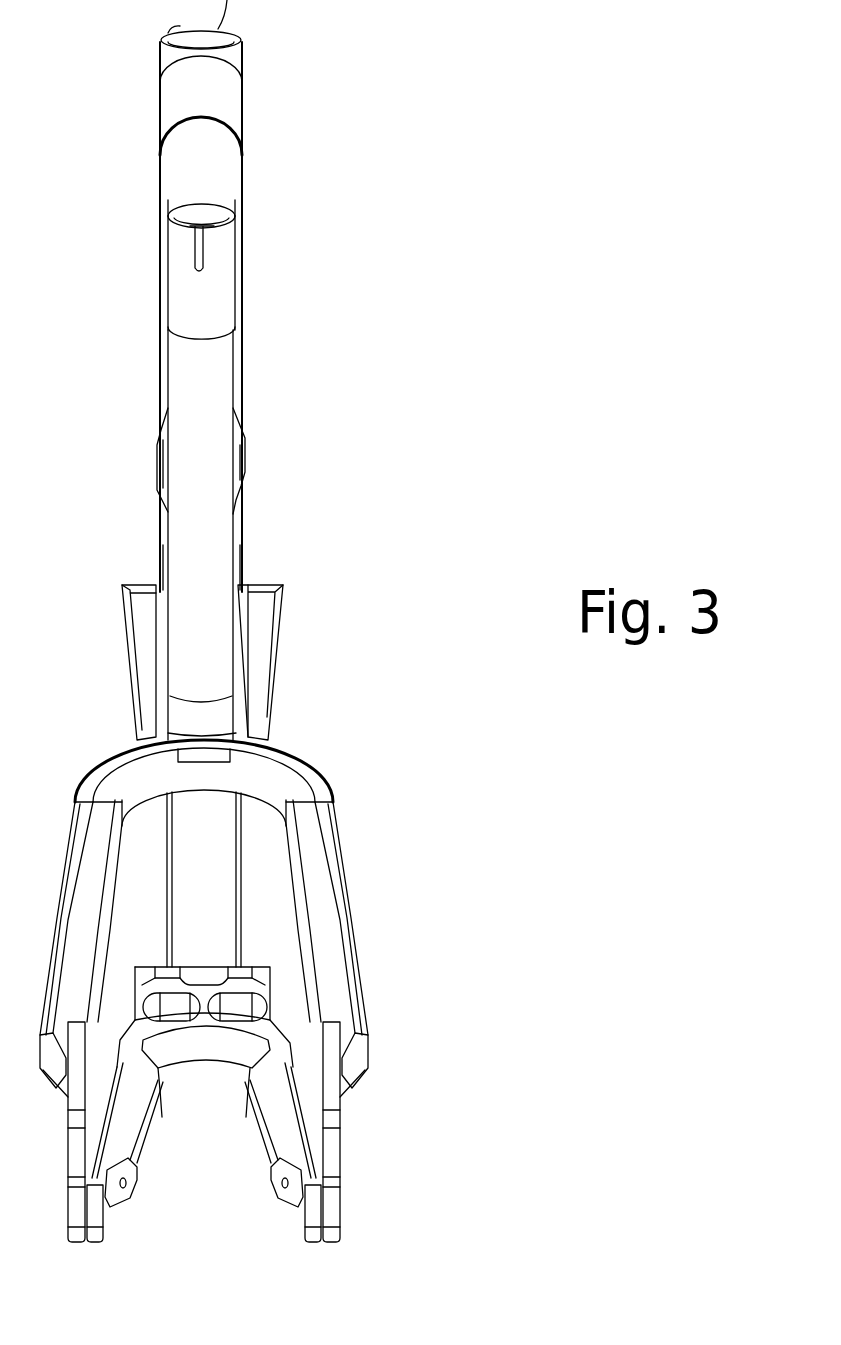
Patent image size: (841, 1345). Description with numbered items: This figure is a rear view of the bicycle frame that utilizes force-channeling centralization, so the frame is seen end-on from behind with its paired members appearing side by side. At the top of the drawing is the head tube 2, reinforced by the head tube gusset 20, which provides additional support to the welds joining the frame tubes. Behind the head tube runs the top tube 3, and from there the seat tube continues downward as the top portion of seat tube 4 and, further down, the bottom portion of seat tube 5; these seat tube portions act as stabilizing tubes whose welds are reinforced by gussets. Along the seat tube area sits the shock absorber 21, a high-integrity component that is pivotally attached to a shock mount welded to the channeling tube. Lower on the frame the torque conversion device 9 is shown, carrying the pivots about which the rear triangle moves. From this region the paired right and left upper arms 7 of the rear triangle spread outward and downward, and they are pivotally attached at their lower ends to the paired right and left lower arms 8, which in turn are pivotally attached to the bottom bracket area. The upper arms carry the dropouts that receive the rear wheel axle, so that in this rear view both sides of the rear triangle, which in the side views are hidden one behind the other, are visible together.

The head tube 2 is at (232, 52).
The head tube gusset 20 is at (226, 104).
The top tube 3 is at (213, 183).
The top portion of seat tube 4 is at (207, 360).
The shock absorber 21 is at (246, 470).
The torque conversion device 9 is at (145, 692).
The upper arms of rear triangle 7 is at (308, 812).
The bottom portion of seat tube 5 is at (203, 876).
The lower arms of rear triangle 8 is at (283, 1107).